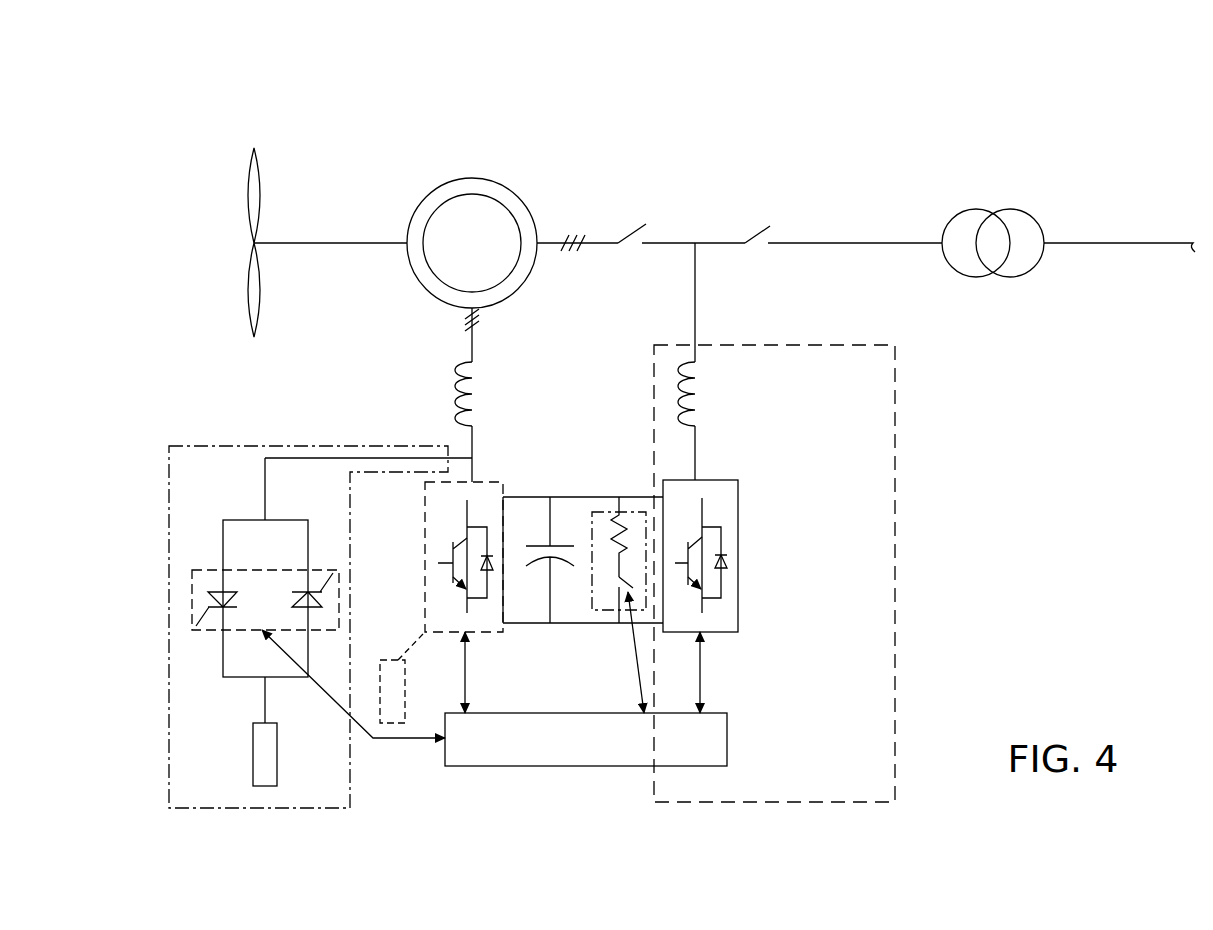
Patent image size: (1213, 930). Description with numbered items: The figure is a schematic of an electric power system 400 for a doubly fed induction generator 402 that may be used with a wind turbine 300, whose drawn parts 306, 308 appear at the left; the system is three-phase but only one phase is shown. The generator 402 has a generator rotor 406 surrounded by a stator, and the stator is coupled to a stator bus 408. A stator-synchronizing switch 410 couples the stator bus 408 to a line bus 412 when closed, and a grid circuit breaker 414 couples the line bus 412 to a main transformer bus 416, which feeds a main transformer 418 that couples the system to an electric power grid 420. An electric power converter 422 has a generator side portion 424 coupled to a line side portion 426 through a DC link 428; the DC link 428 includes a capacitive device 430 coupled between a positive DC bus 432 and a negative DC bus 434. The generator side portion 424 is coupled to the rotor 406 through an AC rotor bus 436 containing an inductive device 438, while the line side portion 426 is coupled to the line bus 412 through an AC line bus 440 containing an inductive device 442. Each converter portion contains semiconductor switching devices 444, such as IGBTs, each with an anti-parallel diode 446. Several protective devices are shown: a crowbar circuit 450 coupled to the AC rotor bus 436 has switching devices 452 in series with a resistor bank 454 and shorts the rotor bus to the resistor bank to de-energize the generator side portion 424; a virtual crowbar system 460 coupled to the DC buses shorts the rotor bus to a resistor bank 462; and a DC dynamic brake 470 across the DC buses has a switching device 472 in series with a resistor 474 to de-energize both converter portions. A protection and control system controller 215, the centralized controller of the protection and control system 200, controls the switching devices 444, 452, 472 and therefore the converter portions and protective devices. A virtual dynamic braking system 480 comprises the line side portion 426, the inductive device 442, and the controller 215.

The electric power system protection and control system 200 is at (535, 768).
The electric power system protection and control system controller 215 is at (543, 751).
The wind turbine 300 is at (387, 142).
The rotor shaft 306 is at (372, 243).
The rotor blades 308 is at (248, 312).
The electric power system 400 is at (1087, 92).
The doubly fed induction generator 402 is at (482, 162).
The generator rotor 406 is at (455, 254).
The stator bus 408 is at (603, 243).
The stator-synchronizing switch 410 is at (646, 224).
The line bus 412 is at (710, 243).
The grid circuit breaker 414 is at (770, 226).
The main transformer bus 416 is at (850, 243).
The main transformer 418 is at (1000, 210).
The electric power grid 420 is at (525, 200).
The electric power converter 422 is at (515, 453).
The generator side portion 424 is at (443, 633).
The line side portion 426 is at (738, 493).
The DC link 428 is at (527, 497).
The capacitive device 430 is at (548, 560).
The positive DC bus 432 is at (586, 497).
The negative DC bus 434 is at (568, 623).
The AC rotor bus 436 is at (471, 343).
The inductive device 438 is at (455, 390).
The AC line bus 440 is at (695, 297).
The inductive device 442 is at (695, 388).
The semiconductor switching device 444 is at (462, 560).
The anti-parallel diode 446 is at (485, 553).
The crowbar circuit 450 is at (212, 470).
The switching devices 452 is at (255, 565).
The resistor bank 454 is at (260, 757).
The virtual crowbar system 460 is at (425, 630).
The resistor bank 462 is at (385, 660).
The DC dynamic brake 470 is at (607, 612).
The switching device 472 is at (616, 579).
The resistor 474 is at (622, 530).
The virtual dynamic braking system 480 is at (895, 451).